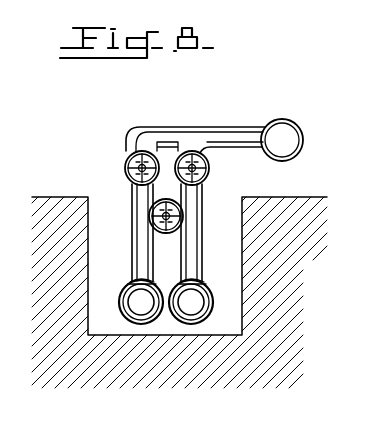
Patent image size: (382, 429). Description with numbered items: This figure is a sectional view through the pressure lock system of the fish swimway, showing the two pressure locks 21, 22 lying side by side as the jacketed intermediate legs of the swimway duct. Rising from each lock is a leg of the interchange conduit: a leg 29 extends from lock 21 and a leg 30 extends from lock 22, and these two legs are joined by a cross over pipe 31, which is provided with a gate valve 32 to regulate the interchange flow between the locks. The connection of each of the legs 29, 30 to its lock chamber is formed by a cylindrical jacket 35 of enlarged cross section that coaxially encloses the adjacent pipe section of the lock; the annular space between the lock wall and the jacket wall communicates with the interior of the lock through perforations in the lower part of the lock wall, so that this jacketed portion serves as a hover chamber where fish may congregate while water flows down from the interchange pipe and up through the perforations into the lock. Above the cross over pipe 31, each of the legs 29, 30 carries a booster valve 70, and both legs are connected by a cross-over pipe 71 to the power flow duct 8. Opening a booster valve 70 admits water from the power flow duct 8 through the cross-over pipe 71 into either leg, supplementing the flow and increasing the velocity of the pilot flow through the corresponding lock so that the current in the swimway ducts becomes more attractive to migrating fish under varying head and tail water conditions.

The power flow duct 8 is at (295, 120).
The cross-over pipe 71 is at (217, 137).
The booster valve 70 is at (126, 166).
The leg 29 is at (140, 247).
The leg 30 is at (195, 246).
The cross over pipe 31 is at (160, 213).
The gate valve 32 is at (178, 221).
The cylindrical jacket 35 is at (126, 287).
The pressure lock 21 is at (124, 311).
The pressure lock 22 is at (207, 302).